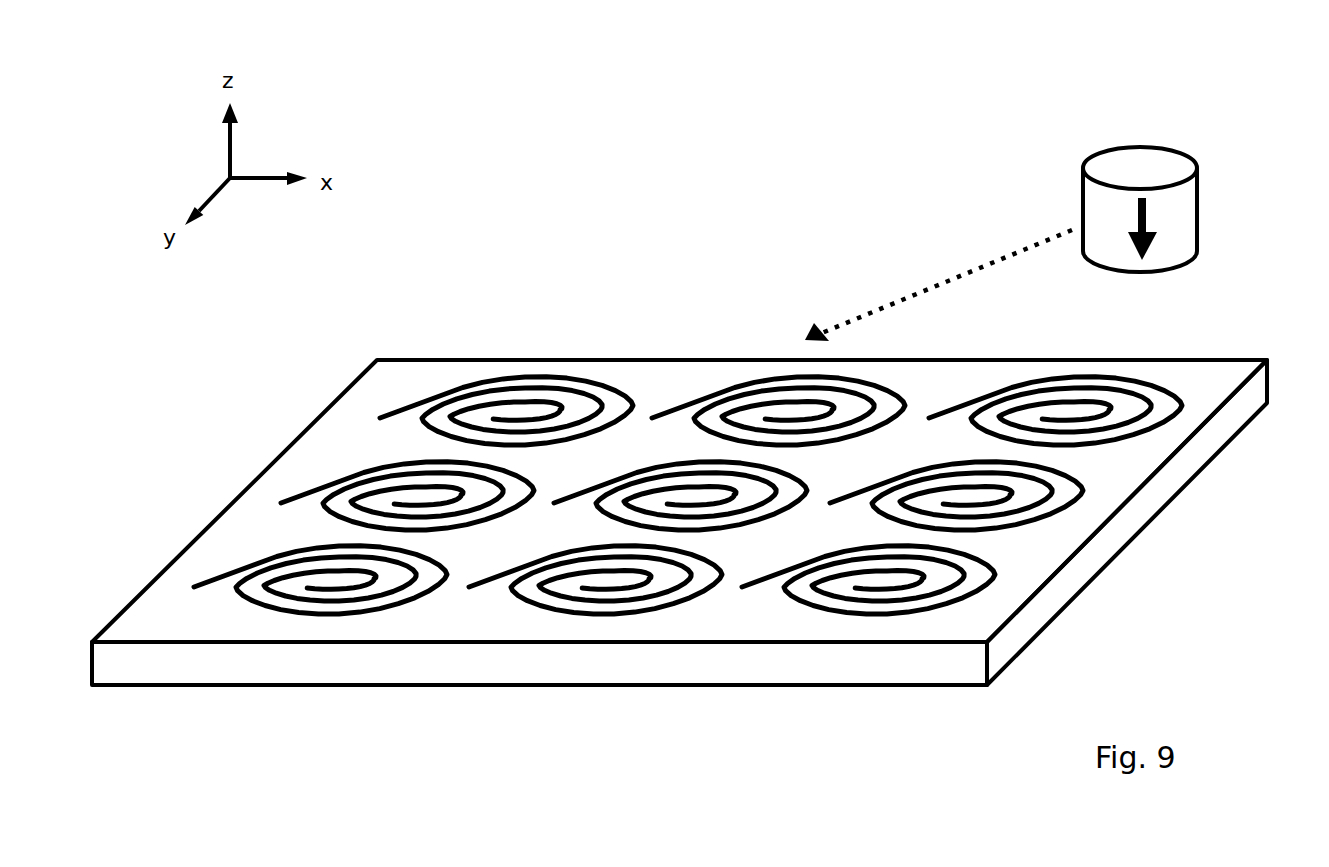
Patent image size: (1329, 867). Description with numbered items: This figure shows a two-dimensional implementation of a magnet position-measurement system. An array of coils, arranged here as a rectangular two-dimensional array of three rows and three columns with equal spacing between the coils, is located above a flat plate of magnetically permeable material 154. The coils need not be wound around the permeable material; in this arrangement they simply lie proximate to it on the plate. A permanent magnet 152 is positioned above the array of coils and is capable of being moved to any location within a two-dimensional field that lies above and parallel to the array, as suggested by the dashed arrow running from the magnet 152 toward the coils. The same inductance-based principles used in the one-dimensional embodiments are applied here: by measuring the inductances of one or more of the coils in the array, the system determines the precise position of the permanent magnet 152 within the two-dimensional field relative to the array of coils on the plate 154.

The permanent magnet 152 is at (1107, 207).
The flat plate of magnetically permeable material 154 is at (1107, 552).